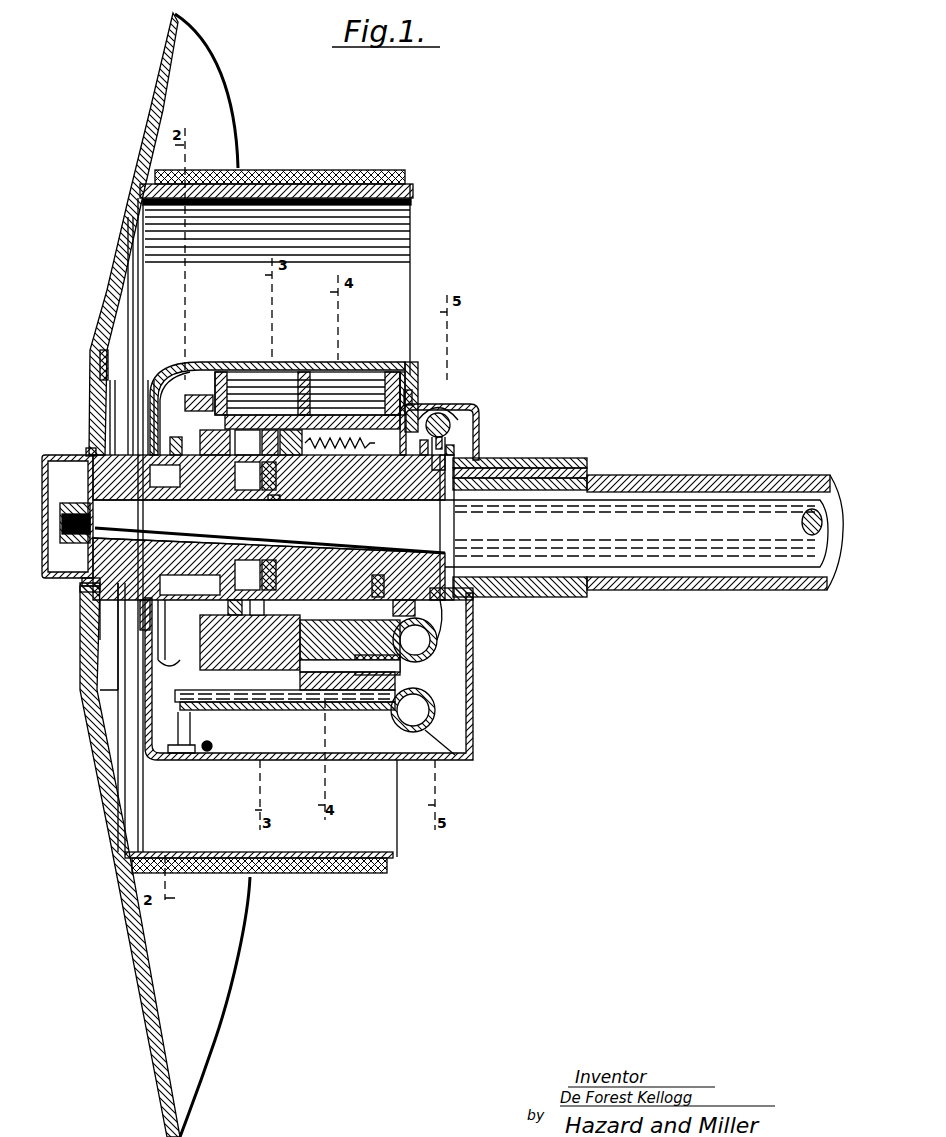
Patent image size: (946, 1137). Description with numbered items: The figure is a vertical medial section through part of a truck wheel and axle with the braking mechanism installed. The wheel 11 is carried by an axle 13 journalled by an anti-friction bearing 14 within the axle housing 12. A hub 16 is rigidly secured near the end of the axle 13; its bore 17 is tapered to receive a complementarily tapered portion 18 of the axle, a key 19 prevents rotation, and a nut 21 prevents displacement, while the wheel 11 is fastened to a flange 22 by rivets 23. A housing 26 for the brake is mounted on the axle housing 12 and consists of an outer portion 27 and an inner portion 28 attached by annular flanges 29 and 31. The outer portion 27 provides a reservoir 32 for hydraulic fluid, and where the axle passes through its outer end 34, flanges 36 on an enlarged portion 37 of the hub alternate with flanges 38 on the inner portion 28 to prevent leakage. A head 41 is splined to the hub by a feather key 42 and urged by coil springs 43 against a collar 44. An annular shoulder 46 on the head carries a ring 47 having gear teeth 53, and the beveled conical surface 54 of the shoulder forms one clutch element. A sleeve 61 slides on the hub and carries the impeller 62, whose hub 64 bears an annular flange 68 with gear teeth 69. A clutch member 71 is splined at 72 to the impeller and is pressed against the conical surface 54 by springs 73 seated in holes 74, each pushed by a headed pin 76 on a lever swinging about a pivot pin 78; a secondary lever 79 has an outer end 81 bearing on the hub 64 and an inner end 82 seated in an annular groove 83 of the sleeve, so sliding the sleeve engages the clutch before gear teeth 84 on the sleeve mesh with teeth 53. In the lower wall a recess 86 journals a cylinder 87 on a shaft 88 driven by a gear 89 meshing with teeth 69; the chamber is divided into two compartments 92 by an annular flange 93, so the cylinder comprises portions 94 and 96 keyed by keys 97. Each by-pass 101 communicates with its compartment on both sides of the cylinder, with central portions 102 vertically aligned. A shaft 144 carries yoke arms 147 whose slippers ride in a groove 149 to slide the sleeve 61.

The wheel 11 is at (166, 84).
The axle housing 12 is at (660, 480).
The axle 13 is at (695, 560).
The anti-friction bearing 14 is at (543, 490).
The hub 16 is at (68, 460).
The bore 17 is at (86, 585).
The tapered portion 18 is at (98, 545).
The key 19 is at (82, 548).
The nut 21 is at (60, 540).
The flange 22 is at (98, 618).
The rivets 23 is at (88, 450).
The housing 26 is at (484, 720).
The outer portion 27 is at (470, 668).
The inner portion 28 is at (476, 406).
The annular flange 29 is at (505, 458).
The annular flange 31 is at (535, 468).
The reservoir 32 is at (452, 704).
The outer end 34 is at (148, 698).
The flanges 36 is at (140, 445).
The enlarged portion 37 is at (88, 596).
The flanges 38 is at (156, 430).
The head 41 is at (228, 415).
The feather key 42 is at (166, 615).
The coil springs 43 is at (176, 438).
The collar 44 is at (248, 430).
The annular shoulder 46 is at (272, 430).
The ring 47 is at (288, 445).
The gear teeth 53 is at (280, 485).
The conical surface 54 is at (208, 752).
The sleeve 61 is at (443, 450).
The impeller 62 is at (378, 366).
The hub 64 is at (360, 415).
The annular flange 68 is at (180, 440).
The gear teeth 69 is at (197, 396).
The clutch member 71 is at (335, 420).
The splines 72 is at (330, 440).
The springs 73 is at (327, 713).
The hole 74 is at (413, 372).
The headed pin 76 is at (424, 440).
The pivot pin 78 is at (409, 398).
The secondary lever 79 is at (441, 414).
The outer end 81 is at (410, 604).
The inner end 82 is at (447, 550).
The annular groove 83 is at (378, 575).
The gear teeth 84 is at (280, 645).
The recess 86 is at (306, 670).
The cylinder 87 is at (360, 660).
The shaft 88 is at (368, 718).
The gear 89 is at (186, 712).
The compartments 92 is at (345, 380).
The annular flange 93 is at (292, 660).
The cylinder portion 94 is at (343, 723).
The cylinder portion 96 is at (240, 625).
The keys 97 is at (262, 645).
The by-pass 101 is at (440, 642).
The central portions 102 is at (432, 727).
The shaft 144 is at (452, 452).
The arms 147 is at (441, 447).
The groove 149 is at (462, 604).